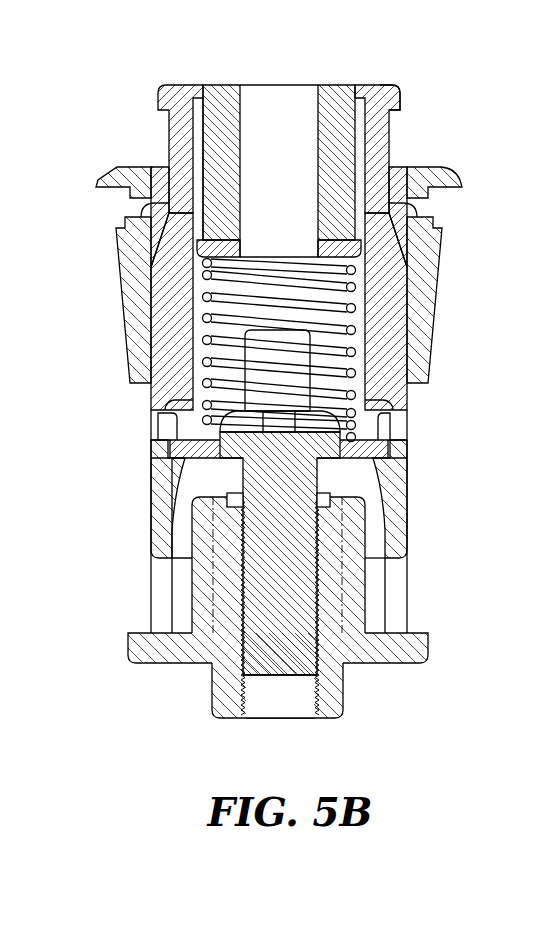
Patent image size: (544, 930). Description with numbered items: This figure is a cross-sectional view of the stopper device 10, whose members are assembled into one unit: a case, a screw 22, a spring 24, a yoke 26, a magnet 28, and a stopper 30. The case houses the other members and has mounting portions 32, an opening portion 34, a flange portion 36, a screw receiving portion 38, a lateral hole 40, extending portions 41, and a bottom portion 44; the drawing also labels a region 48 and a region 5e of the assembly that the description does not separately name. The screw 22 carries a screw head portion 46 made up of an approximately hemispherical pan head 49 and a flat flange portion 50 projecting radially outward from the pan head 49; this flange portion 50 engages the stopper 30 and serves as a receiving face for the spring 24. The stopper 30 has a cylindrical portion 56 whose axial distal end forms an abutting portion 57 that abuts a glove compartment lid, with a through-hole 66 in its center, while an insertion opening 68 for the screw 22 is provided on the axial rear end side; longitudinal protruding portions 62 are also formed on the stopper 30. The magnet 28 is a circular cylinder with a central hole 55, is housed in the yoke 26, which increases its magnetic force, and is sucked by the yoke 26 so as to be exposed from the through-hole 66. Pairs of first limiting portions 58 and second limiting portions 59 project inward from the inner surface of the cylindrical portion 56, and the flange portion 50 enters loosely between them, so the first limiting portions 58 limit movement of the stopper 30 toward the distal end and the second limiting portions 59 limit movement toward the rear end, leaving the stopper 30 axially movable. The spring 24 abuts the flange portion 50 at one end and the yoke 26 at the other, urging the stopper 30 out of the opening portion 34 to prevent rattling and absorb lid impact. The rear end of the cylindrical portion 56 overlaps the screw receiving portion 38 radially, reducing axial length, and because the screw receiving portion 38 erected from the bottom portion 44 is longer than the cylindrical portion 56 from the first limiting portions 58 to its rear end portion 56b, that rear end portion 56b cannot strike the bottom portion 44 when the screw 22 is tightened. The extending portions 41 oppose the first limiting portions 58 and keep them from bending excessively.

The stopper device 10 is at (293, 750).
The screw 22 is at (292, 540).
The spring 24 is at (325, 327).
The yoke 26 is at (345, 248).
The magnet 28 is at (218, 100).
The stopper 30 is at (155, 122).
The mounting portions 32 is at (120, 250).
The opening portion 34 is at (397, 172).
The flange portion 36 is at (98, 182).
The screw receiving portion 38 is at (337, 610).
The lateral hole 40 is at (403, 617).
The extending portions 41 is at (197, 598).
The bottom portion 44 is at (398, 648).
The screw head portion 46 is at (215, 430).
The boss 48 is at (270, 625).
The pan head 49 is at (220, 438).
The flange portion 50 is at (388, 430).
The central hole 55 is at (240, 157).
The cylindrical portion 56 is at (167, 298).
The rear end portion 56b is at (403, 547).
The abutting portion 57 is at (374, 85).
The first limiting portions 58 is at (377, 462).
The second limiting portions 59 is at (170, 400).
The recess 5e is at (183, 470).
The longitudinal protruding portions 62 is at (362, 133).
The through-hole 66 is at (295, 90).
The insertion opening 68 is at (182, 548).